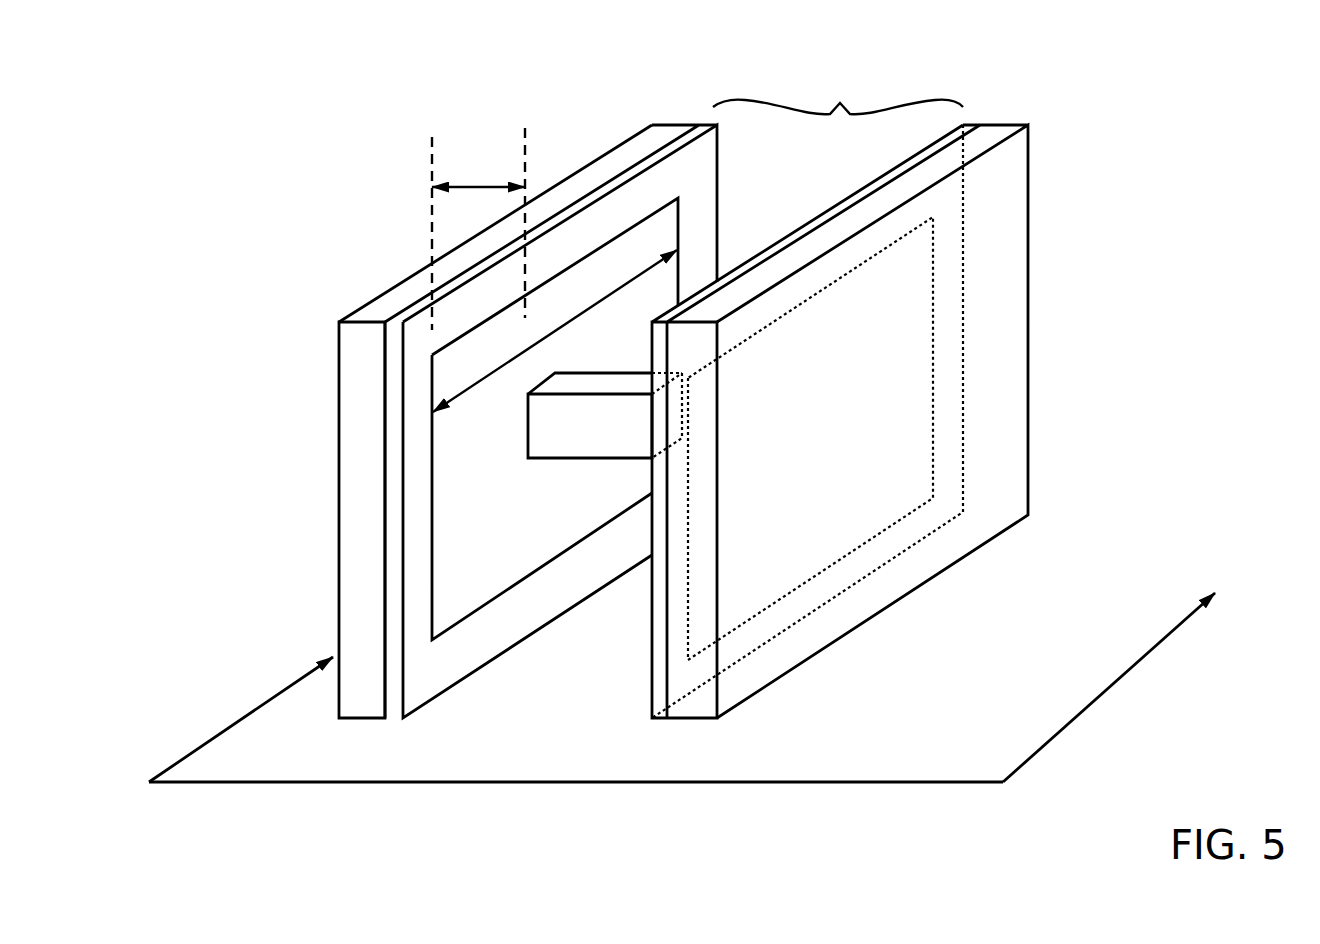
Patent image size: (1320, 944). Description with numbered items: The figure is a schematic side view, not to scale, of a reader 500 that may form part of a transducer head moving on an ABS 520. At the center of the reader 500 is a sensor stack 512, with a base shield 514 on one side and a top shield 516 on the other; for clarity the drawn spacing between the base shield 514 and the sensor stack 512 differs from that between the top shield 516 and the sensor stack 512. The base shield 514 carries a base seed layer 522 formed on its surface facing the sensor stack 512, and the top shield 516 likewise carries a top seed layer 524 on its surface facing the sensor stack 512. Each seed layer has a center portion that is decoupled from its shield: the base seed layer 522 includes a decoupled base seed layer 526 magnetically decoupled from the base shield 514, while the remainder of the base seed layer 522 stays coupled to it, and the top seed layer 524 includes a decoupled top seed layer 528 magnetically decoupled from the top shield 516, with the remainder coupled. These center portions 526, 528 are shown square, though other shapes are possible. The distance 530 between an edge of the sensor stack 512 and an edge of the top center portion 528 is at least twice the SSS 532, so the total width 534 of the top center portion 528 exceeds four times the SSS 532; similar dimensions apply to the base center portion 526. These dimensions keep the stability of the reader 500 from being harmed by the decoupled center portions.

The reader 500 is at (240, 147).
The sensor stack 512 is at (542, 423).
The base shield 514 is at (700, 690).
The top shield 516 is at (353, 622).
The ABS 520 is at (1068, 732).
The base seed layer 522 is at (853, 434).
The top seed layer 524 is at (551, 387).
The decoupled base seed layer 526 is at (857, 430).
The decoupled top seed layer 528 is at (480, 563).
The distance 530 is at (473, 178).
The SSS 532 is at (833, 88).
The total width 534 is at (483, 383).